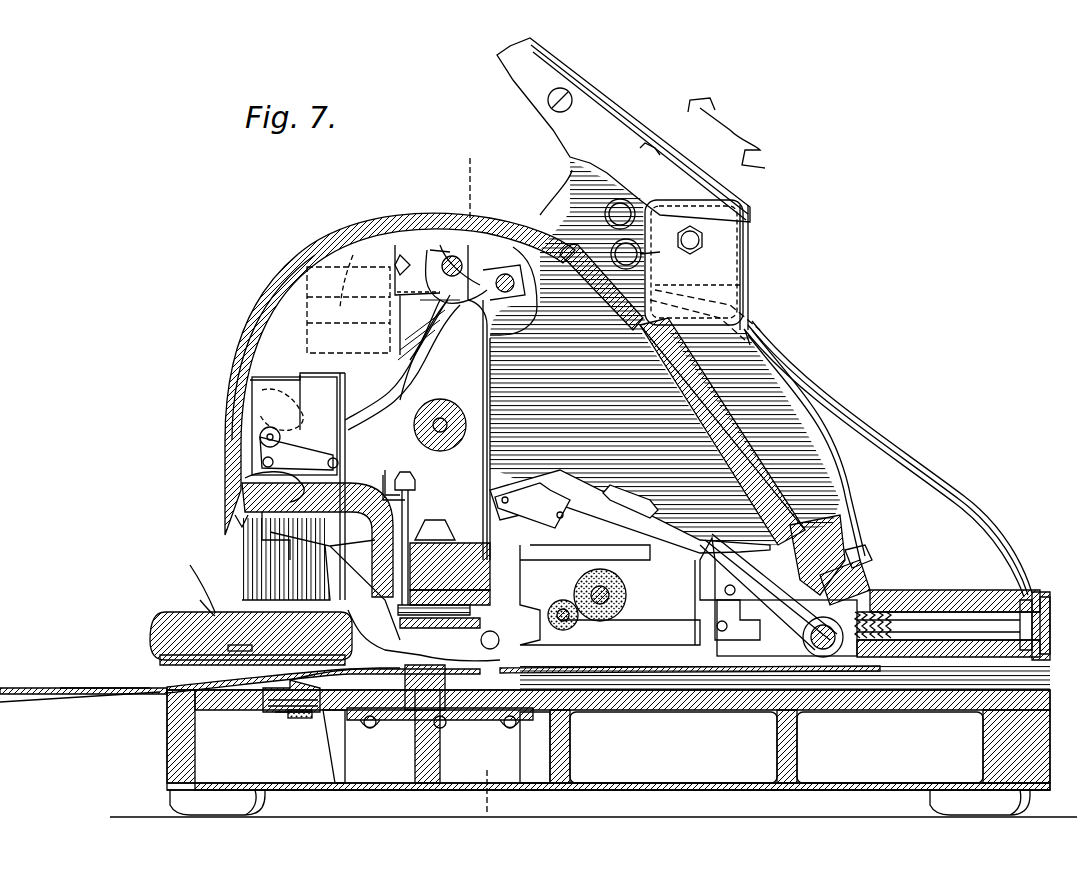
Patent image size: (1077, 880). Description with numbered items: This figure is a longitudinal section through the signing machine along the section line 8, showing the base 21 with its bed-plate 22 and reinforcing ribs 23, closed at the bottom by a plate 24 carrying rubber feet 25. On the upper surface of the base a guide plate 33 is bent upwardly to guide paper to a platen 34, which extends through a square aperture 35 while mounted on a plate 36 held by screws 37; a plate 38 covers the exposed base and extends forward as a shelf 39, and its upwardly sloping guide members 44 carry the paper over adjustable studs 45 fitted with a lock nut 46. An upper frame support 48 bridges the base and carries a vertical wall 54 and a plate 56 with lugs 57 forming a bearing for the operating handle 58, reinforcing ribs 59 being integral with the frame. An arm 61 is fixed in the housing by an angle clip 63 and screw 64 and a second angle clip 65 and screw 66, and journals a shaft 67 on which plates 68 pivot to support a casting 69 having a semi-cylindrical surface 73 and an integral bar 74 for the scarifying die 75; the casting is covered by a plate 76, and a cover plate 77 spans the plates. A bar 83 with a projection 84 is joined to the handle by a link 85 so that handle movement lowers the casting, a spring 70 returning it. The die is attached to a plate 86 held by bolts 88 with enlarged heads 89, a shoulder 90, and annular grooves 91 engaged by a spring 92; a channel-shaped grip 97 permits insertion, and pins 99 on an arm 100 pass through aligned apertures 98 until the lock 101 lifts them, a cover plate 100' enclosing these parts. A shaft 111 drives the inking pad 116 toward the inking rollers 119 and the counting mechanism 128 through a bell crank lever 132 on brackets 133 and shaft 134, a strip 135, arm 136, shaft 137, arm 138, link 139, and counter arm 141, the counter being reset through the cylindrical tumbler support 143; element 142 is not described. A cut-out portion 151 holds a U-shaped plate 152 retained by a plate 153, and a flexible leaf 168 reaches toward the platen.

The section line 8 is at (470, 172).
The base 21 is at (168, 733).
The bed-plate 22 is at (718, 710).
The reinforcing ribs 23 is at (795, 744).
The plate 24 is at (400, 790).
The rubber feet 25 is at (175, 803).
The guide plate 33 is at (340, 672).
The platen 34 is at (445, 680).
The square aperture 35 is at (495, 676).
The plate 36 is at (468, 720).
The screws 37 is at (366, 726).
The plate 38 is at (118, 688).
The shelf 39 is at (22, 688).
The guide members 44 is at (230, 680).
The stud 45 is at (270, 706).
The lock nut 46 is at (283, 718).
The upper frame support 48 is at (180, 625).
The vertical wall 54 is at (238, 518).
The plate 56 is at (655, 420).
The lugs 57 is at (720, 242).
The operating handle 58 is at (585, 95).
The reinforcing ribs 59 is at (940, 510).
The arm 61 is at (700, 380).
The angle clip 63 is at (717, 610).
The screw 64 is at (970, 612).
The angle clip 65 is at (735, 580).
The screw 66 is at (855, 550).
The shaft 67 is at (805, 632).
The plates 68 is at (545, 270).
The casting 69 is at (268, 340).
The spring 70 is at (810, 525).
The semi-cylindrical surface 73 is at (248, 497).
The bar 74 is at (470, 560).
The scarifying die 75 is at (424, 637).
The plate 76 is at (316, 270).
The cover plate 77 is at (530, 240).
The bar 83 is at (740, 285).
The projection 84 is at (645, 256).
The link 85 is at (605, 212).
The plate 86 is at (470, 600).
The bolts 88 is at (470, 578).
The enlarged heads 89 is at (480, 620).
The shoulder 90 is at (458, 545).
The annular grooves 91 is at (400, 560).
The spring 92 is at (450, 478).
The channel-shaped grip 97 is at (290, 535).
The aligned apertures 98 is at (400, 582).
The pins 99 is at (410, 525).
The arm 100 is at (406, 528).
The cover plate 100' is at (441, 402).
The lock 101 is at (353, 252).
The shaft 111 is at (440, 410).
The inking pad 116 is at (415, 725).
The inking rollers 119 is at (585, 625).
The counting mechanism 128 is at (300, 380).
The bell crank lever 132 is at (410, 332).
The brackets 133 is at (410, 255).
The shaft 134 is at (452, 258).
The strip 135 is at (660, 310).
The arm 136 is at (480, 260).
The shaft 137 is at (505, 273).
The arm 138 is at (408, 372).
The link 139 is at (240, 472).
The arm 141 is at (260, 444).
The lever 142 is at (230, 402).
The cylindrical tumbler support 143 is at (232, 385).
The cut-out portion 151 is at (200, 600).
The U-shaped plate 152 is at (190, 556).
The plate 153 is at (228, 648).
The flexible leaf 168 is at (630, 690).